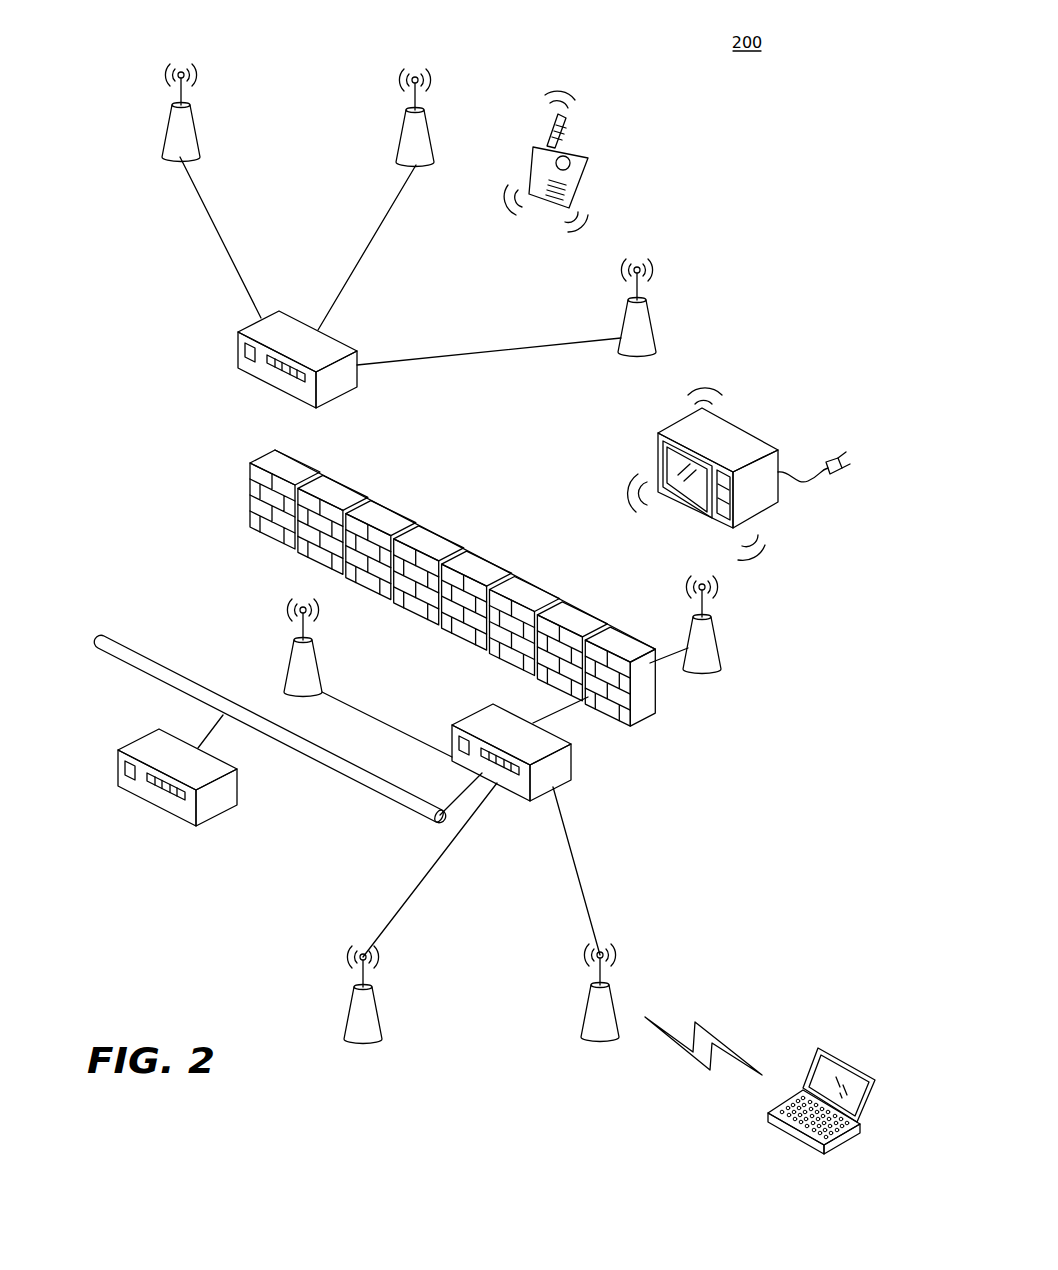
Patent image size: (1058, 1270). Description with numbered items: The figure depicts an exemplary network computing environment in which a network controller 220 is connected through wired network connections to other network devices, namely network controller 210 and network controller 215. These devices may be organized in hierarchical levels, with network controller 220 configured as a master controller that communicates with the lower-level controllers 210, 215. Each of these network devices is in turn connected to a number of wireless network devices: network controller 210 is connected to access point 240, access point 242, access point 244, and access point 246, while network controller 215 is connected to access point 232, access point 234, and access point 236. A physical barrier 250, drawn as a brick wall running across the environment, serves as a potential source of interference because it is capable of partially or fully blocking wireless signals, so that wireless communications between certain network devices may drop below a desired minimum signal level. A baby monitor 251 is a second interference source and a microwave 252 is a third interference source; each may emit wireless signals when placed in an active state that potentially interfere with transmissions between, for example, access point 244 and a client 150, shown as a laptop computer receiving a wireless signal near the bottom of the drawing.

The client 150 is at (851, 1060).
The network controller 210 is at (570, 758).
The network controller 215 is at (238, 352).
The network controller 220 is at (216, 815).
The access point 232 is at (165, 126).
The access point 234 is at (400, 134).
The access point 236 is at (652, 325).
The access point 240 is at (288, 646).
The access point 242 is at (348, 1008).
The access point 244 is at (584, 1008).
The access point 246 is at (708, 672).
The physical barrier 250 is at (467, 543).
The baby monitor 251 is at (590, 170).
The microwave 252 is at (658, 455).